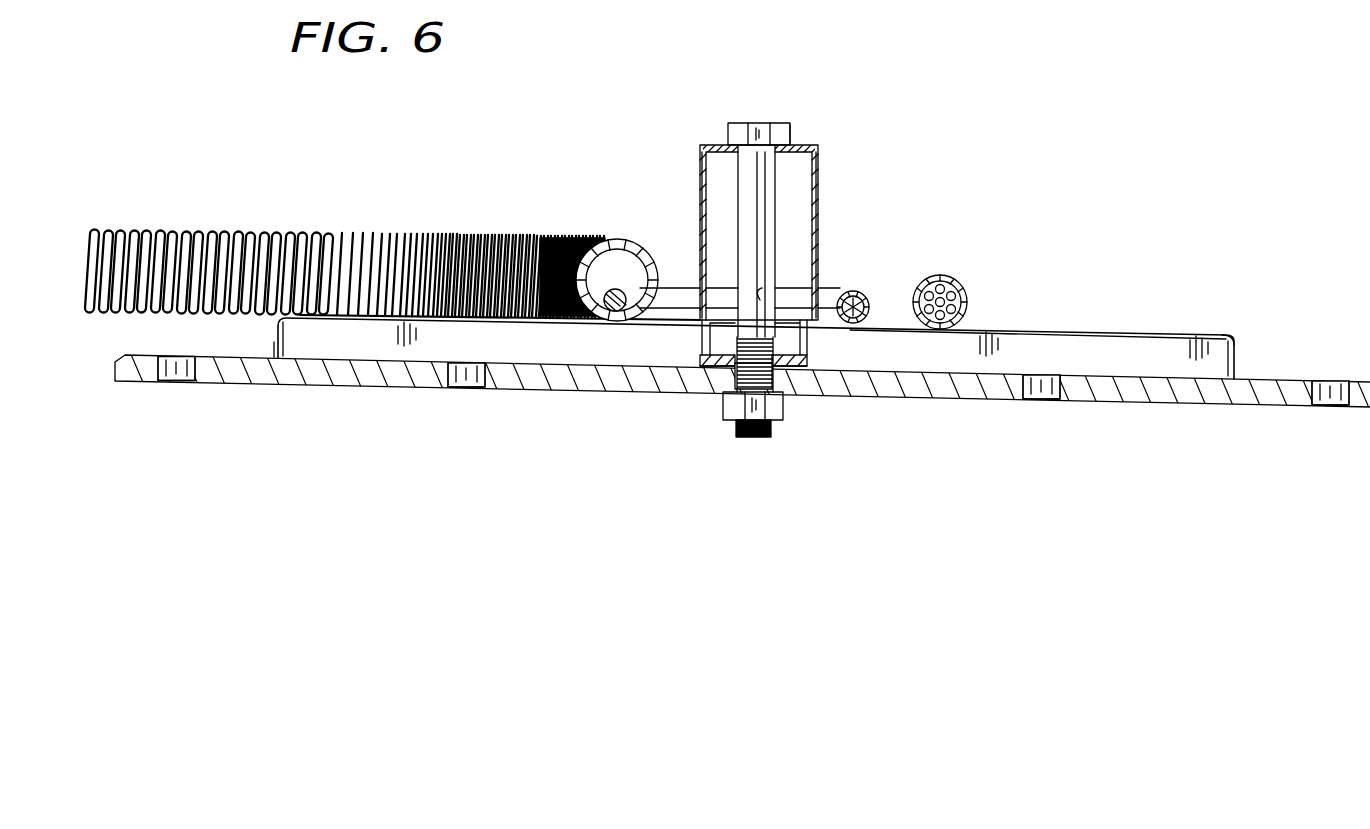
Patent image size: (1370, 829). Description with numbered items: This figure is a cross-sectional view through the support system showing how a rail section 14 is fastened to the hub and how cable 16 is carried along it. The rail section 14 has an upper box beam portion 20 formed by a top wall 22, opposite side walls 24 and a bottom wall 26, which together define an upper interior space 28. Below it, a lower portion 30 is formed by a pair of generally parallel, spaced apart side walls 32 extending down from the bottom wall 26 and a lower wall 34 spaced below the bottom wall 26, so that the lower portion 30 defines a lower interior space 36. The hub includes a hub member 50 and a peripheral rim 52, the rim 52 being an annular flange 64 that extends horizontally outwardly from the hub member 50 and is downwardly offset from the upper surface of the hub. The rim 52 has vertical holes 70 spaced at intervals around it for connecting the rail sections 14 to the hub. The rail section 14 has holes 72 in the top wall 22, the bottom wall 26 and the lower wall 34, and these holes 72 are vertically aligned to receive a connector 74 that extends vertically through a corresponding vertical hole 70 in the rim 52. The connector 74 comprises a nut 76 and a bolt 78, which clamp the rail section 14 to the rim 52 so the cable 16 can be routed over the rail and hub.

The rail section 14 is at (813, 150).
The cable 16 is at (322, 230).
The upper box beam portion 20 is at (818, 168).
The top wall 22 is at (740, 145).
The side wall 24 is at (703, 177).
The bottom wall 26 is at (728, 285).
The upper interior space 28 is at (822, 232).
The lower portion 30 is at (830, 380).
The side wall 32 is at (700, 342).
The lower wall 34 is at (735, 375).
The lower interior space 36 is at (808, 347).
The hub member 50 is at (1234, 338).
The peripheral rim 52 is at (1282, 378).
The annular flange 64 is at (270, 353).
The vertical hole 70 is at (165, 382).
The hole 72 is at (748, 142).
The connector 74 is at (733, 125).
The nut 76 is at (778, 423).
The bolt 78 is at (792, 125).